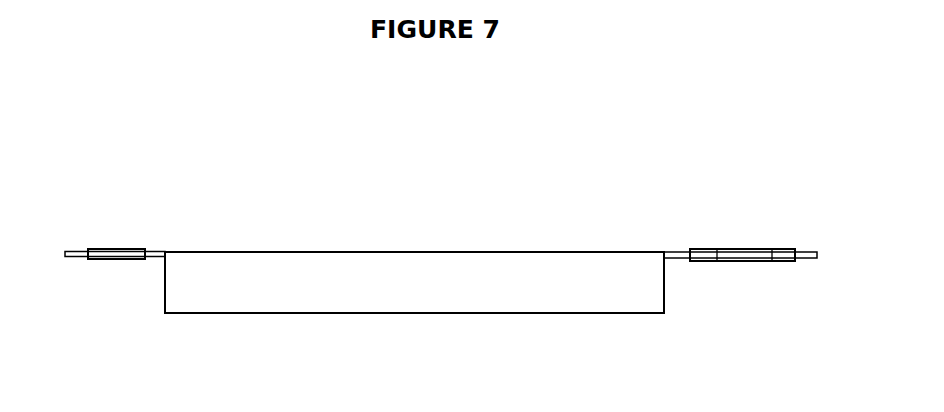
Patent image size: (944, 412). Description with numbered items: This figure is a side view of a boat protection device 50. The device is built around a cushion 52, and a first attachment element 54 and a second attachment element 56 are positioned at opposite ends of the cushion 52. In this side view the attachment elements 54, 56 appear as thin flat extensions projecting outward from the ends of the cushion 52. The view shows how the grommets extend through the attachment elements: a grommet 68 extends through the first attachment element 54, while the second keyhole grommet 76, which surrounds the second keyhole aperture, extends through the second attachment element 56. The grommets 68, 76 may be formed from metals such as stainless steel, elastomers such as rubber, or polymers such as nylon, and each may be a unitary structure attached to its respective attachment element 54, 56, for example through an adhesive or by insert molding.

The boat protection device 50 is at (417, 170).
The cushion 52 is at (422, 287).
The first attachment element 54 is at (675, 252).
The second attachment element 56 is at (156, 252).
The grommet 68 is at (760, 250).
The second keyhole grommet 76 is at (113, 249).